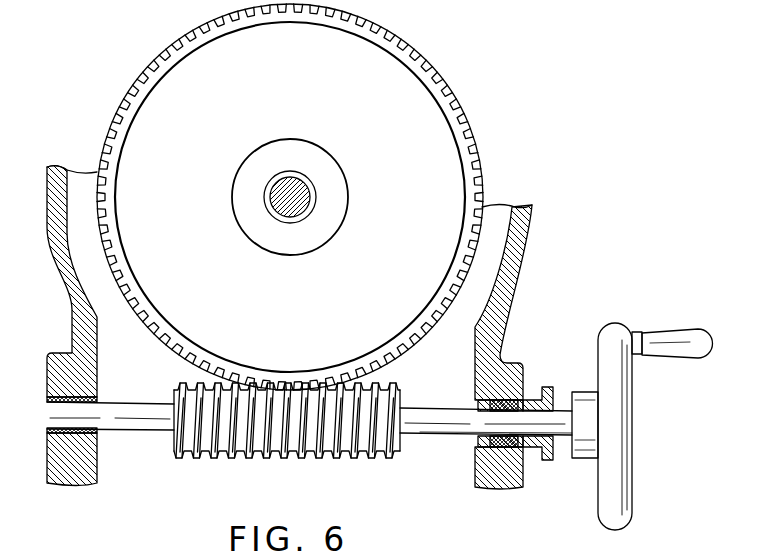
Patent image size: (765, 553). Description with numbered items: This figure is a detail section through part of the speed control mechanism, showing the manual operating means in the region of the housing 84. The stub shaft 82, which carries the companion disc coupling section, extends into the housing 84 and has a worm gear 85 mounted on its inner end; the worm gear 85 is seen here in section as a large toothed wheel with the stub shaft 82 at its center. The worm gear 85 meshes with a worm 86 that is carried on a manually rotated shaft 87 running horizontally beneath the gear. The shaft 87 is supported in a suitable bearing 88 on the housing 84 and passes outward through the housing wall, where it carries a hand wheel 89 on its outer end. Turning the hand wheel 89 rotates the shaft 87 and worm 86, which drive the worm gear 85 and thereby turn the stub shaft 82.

The stub shaft 82 is at (282, 192).
The housing 84 is at (528, 248).
The worm gear 85 is at (470, 132).
The worm 86 is at (375, 460).
The manually rotated shaft 87 is at (430, 445).
The bearing 88 is at (478, 408).
The hand wheel 89 is at (623, 484).